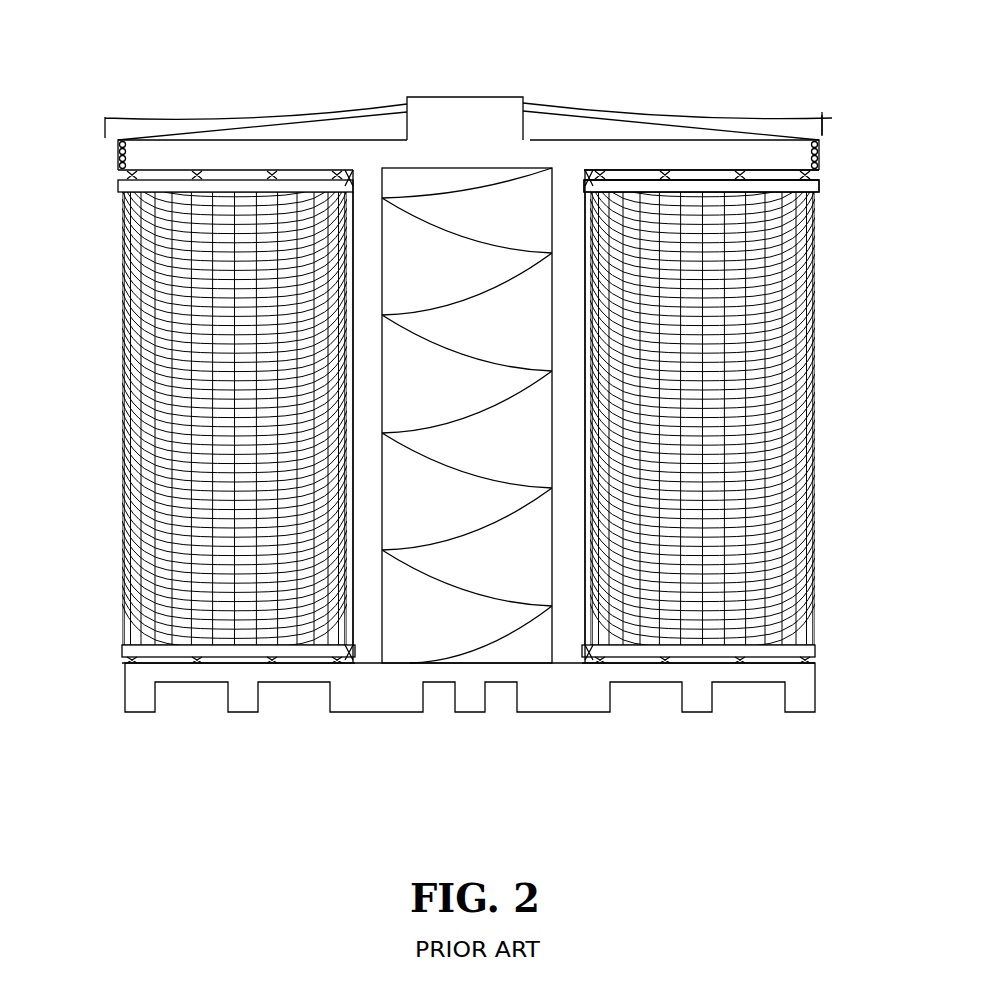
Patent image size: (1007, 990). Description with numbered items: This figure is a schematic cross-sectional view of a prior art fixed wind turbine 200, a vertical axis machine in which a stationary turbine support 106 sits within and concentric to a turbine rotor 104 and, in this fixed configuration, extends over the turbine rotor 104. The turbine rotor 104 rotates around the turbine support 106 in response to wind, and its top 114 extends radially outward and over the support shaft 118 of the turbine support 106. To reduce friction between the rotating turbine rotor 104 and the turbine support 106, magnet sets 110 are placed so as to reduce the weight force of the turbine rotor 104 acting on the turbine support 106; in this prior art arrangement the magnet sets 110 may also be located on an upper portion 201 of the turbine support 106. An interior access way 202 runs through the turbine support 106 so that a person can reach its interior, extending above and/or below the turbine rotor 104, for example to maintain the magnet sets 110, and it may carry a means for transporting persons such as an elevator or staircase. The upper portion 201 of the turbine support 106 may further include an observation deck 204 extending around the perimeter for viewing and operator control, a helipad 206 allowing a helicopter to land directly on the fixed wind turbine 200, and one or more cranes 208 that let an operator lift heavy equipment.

The fixed wind turbine 200 is at (103, 108).
The upper portion 201 is at (158, 157).
The interior access way 202 is at (527, 650).
The observation deck 204 is at (812, 153).
The helipad 206 is at (472, 96).
The crane 208 is at (822, 115).
The turbine rotor 104 is at (820, 184).
The turbine support 106 is at (381, 373).
The magnet sets 110 is at (198, 171).
The top 114 is at (814, 178).
The support shaft 118 is at (381, 458).